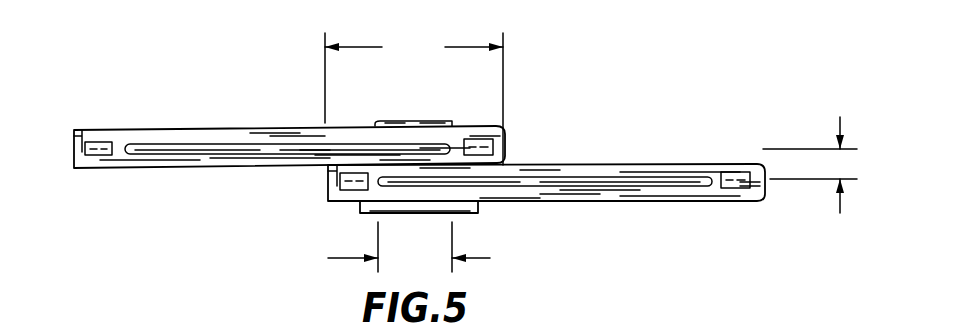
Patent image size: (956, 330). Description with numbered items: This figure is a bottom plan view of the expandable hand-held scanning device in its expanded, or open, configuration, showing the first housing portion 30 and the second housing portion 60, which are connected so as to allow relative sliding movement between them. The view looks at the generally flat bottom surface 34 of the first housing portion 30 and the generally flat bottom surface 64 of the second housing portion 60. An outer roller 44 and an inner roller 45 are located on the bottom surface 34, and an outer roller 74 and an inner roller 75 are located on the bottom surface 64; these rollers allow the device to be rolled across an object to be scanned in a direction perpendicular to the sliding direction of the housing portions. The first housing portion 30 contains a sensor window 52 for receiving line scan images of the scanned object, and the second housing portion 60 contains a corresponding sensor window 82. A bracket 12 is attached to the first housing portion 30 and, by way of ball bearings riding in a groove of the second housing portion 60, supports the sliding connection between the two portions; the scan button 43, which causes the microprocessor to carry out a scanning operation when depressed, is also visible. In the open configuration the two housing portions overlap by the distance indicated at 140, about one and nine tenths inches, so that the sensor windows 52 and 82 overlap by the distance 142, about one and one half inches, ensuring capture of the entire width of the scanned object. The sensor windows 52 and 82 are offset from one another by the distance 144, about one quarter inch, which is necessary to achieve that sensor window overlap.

The bracket 12 is at (478, 205).
The first housing portion 30 is at (292, 133).
The bottom surface of first housing portion 34 is at (150, 130).
The scan button 43 is at (427, 119).
The first housing portion outer roller 44 is at (101, 141).
The first housing portion inner roller 45 is at (498, 145).
The sensor window 52 is at (226, 146).
The second housing portion 60 is at (535, 163).
The bottom surface of second housing portion 64 is at (585, 164).
The second housing portion outer roller 74 is at (735, 172).
The second housing portion inner roller 75 is at (328, 190).
The sensor window 82 is at (648, 177).
The overlap of housing portions 140 is at (414, 99).
The overlap of sensor windows 142 is at (409, 247).
The offset of sensor windows 144 is at (810, 165).